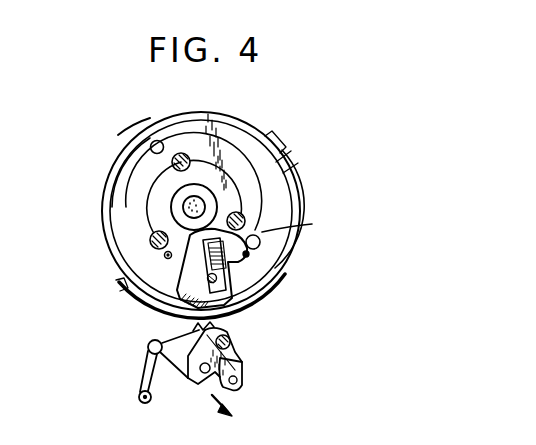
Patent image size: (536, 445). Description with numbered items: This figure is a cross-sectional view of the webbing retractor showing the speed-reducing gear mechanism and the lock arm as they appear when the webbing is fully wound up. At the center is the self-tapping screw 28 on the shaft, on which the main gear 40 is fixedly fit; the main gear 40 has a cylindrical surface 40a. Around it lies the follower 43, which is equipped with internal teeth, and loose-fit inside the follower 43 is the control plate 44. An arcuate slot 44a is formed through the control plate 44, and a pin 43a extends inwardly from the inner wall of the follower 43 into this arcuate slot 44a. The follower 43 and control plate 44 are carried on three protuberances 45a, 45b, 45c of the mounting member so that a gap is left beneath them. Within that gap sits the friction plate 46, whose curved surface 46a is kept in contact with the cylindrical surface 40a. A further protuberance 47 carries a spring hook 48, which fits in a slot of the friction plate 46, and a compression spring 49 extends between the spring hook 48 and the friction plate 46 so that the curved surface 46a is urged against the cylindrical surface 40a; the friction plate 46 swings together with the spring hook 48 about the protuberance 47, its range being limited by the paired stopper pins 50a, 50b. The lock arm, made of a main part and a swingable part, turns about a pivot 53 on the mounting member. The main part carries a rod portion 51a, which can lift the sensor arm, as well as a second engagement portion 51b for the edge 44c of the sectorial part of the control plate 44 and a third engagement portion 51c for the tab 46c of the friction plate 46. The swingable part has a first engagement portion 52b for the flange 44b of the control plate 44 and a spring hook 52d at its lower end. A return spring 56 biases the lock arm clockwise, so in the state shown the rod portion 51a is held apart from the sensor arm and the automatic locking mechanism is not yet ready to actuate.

The self-tapping screw 28 is at (214, 205).
The main gear 40 is at (140, 172).
The cylindrical surface 40a is at (150, 196).
The follower 43 is at (282, 158).
The pin 43a is at (157, 140).
The control plate 44 is at (236, 132).
The arcuate slot 44a is at (140, 160).
The flange 44b is at (277, 148).
The edge of sectorial part 44c is at (118, 283).
The protuberance 45a is at (246, 218).
The protuberance 45b is at (150, 238).
The protuberance 45c is at (184, 154).
The friction plate 46 is at (224, 310).
The curved surface 46a is at (312, 224).
The tab 46c is at (143, 302).
The protuberance 47 is at (216, 277).
The spring hook 48 is at (230, 292).
The compression spring 49 is at (250, 254).
The stopper pin 50a is at (261, 242).
The stopper pin 50b is at (164, 255).
The rod portion 51a is at (192, 385).
The second engagement portion 51b is at (192, 329).
The third engagement portion 51c is at (183, 348).
The first engagement portion 52b is at (228, 331).
The spring hook 52d is at (238, 388).
The pivot 53 is at (241, 360).
The return spring 56 is at (147, 355).